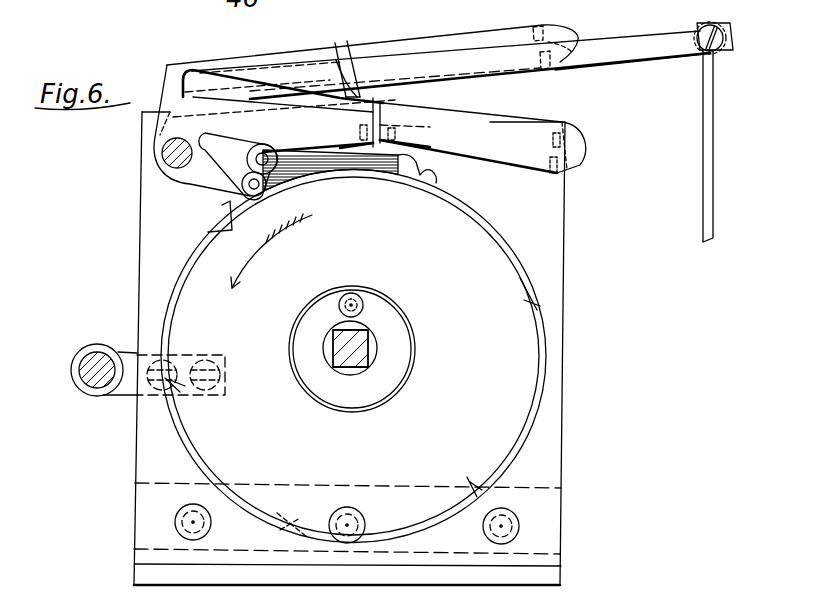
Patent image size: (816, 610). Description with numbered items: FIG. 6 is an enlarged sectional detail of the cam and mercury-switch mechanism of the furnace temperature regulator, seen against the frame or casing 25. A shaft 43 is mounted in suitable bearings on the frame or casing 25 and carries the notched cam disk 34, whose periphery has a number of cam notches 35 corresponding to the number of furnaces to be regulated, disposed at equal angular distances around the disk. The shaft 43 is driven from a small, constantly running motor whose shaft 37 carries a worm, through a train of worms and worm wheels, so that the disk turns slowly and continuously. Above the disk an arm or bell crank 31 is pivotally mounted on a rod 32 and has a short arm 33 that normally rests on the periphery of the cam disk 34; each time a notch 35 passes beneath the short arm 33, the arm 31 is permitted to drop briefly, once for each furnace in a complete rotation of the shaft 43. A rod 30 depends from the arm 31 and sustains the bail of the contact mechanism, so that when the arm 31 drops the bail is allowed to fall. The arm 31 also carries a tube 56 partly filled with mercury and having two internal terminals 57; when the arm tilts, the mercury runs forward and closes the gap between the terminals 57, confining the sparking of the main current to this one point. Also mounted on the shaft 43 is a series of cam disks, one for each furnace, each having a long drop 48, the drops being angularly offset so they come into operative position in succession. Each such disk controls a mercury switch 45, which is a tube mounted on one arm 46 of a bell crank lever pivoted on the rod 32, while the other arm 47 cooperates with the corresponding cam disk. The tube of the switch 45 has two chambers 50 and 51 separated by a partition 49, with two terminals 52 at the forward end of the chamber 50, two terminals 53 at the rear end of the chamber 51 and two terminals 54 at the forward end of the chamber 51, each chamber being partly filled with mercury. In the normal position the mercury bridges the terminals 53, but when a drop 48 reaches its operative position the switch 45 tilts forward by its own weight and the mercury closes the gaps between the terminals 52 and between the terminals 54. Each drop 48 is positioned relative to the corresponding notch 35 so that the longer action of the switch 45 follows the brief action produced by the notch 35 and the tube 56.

The frame or casing 25 is at (568, 262).
The rod 30 is at (710, 147).
The arm or bell crank 31 is at (637, 58).
The rod 32 is at (163, 153).
The short arm 33 is at (230, 150).
The notched cam disk 34 is at (363, 160).
The cam notches 35 is at (223, 213).
The motor shaft 37 is at (93, 363).
The shaft 43 is at (352, 348).
The mercury switch 45 is at (518, 140).
The arm of bell crank lever 46 is at (142, 114).
The arm of bell crank lever 47 is at (195, 182).
The long drop 48 is at (296, 188).
The partition 49 is at (410, 107).
The chamber 50 is at (477, 163).
The chamber 51 is at (268, 148).
The terminals 52 is at (580, 157).
The terminals 53 is at (393, 127).
The terminals 54 is at (343, 57).
The tube 56 is at (447, 27).
The internal terminals 57 is at (547, 32).